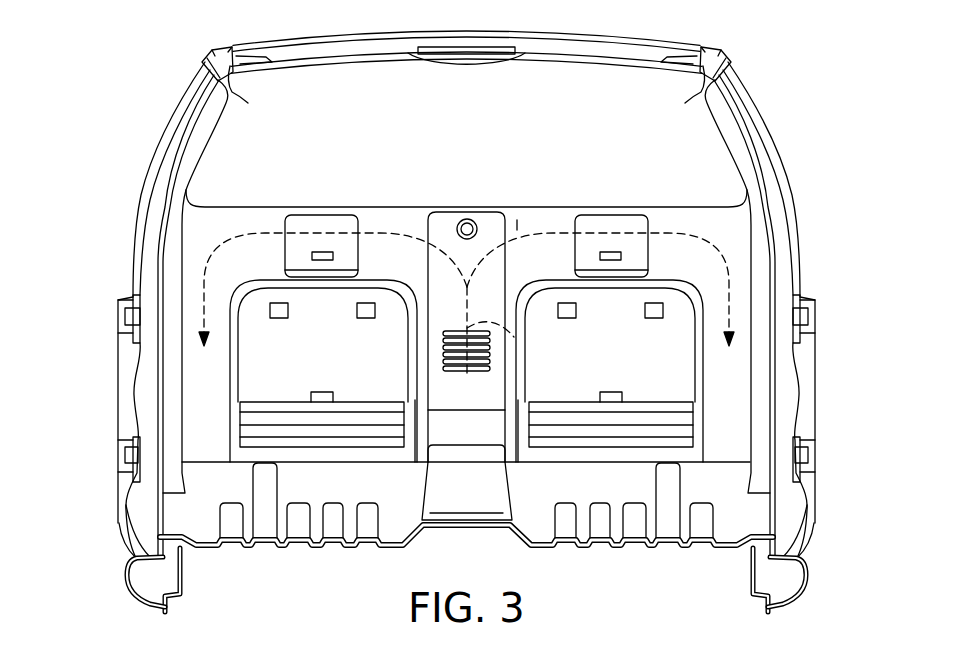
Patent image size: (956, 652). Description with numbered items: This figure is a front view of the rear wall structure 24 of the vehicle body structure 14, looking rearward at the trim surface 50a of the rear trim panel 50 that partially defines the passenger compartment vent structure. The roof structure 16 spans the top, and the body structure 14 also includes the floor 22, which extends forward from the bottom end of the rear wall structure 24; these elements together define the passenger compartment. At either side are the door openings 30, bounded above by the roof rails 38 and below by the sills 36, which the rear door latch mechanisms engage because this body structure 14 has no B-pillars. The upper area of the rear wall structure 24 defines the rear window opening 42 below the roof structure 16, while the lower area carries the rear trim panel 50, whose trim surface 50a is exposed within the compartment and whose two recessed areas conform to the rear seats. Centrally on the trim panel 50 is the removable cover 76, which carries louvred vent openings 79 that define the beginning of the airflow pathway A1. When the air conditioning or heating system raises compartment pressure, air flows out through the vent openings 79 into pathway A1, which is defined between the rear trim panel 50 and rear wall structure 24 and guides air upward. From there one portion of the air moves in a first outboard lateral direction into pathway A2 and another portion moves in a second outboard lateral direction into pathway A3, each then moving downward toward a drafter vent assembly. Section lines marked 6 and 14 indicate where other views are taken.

The roof structure 16 is at (577, 33).
The roof rails 38 is at (210, 50).
The door openings 30 is at (148, 268).
The rear window opening 42 is at (212, 128).
The rear wall structure 24 is at (316, 200).
The rear trim panel 50 is at (243, 217).
The trim surface 50a is at (517, 220).
The removable cover 76 is at (443, 217).
The vent openings 79 is at (443, 349).
The first pathway A1 is at (514, 337).
The pathway A2 is at (388, 232).
The pathway A3 is at (681, 232).
The floor 22 is at (634, 541).
The sills 36 is at (149, 558).
The vehicle body structure 14 is at (213, 197).
The section line 6 is at (93, 283).